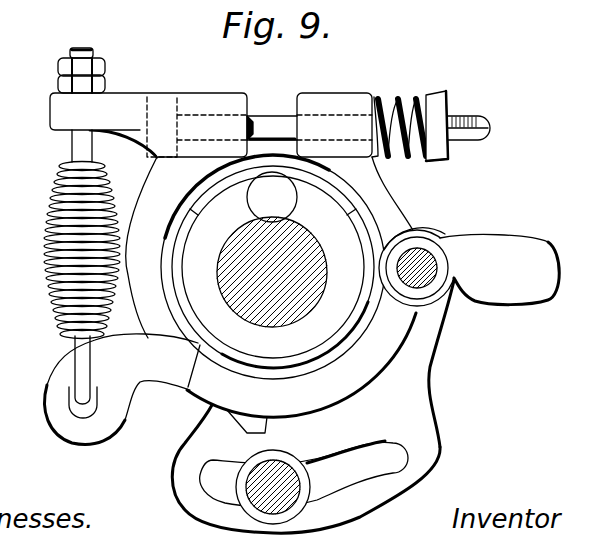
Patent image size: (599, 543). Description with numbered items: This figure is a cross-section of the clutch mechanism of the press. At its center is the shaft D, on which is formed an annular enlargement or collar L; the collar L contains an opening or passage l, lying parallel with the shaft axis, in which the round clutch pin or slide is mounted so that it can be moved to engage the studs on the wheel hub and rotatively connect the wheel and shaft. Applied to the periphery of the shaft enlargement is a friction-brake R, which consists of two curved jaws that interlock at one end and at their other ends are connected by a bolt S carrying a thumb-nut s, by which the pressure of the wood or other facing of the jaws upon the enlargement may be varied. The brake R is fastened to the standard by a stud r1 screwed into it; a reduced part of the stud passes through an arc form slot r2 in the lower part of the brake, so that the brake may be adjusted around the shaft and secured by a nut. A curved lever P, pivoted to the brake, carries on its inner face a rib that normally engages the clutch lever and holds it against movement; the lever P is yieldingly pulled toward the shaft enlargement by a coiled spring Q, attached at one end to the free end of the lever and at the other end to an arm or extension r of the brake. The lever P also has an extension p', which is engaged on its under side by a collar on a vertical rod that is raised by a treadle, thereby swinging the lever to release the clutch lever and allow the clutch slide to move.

The friction-brake R is at (213, 102).
The arm or extension of the friction-brake r is at (81, 105).
The bolt S is at (272, 128).
The thumb-nut s is at (431, 126).
The coiled spring Q is at (46, 252).
The annular enlargement or collar L is at (273, 267).
The opening or passage l is at (303, 193).
The shaft D is at (228, 265).
The curved lever P is at (122, 389).
The extension of the lever P p' is at (469, 267).
The stud r1 is at (246, 487).
The arc form slot r2 is at (341, 470).